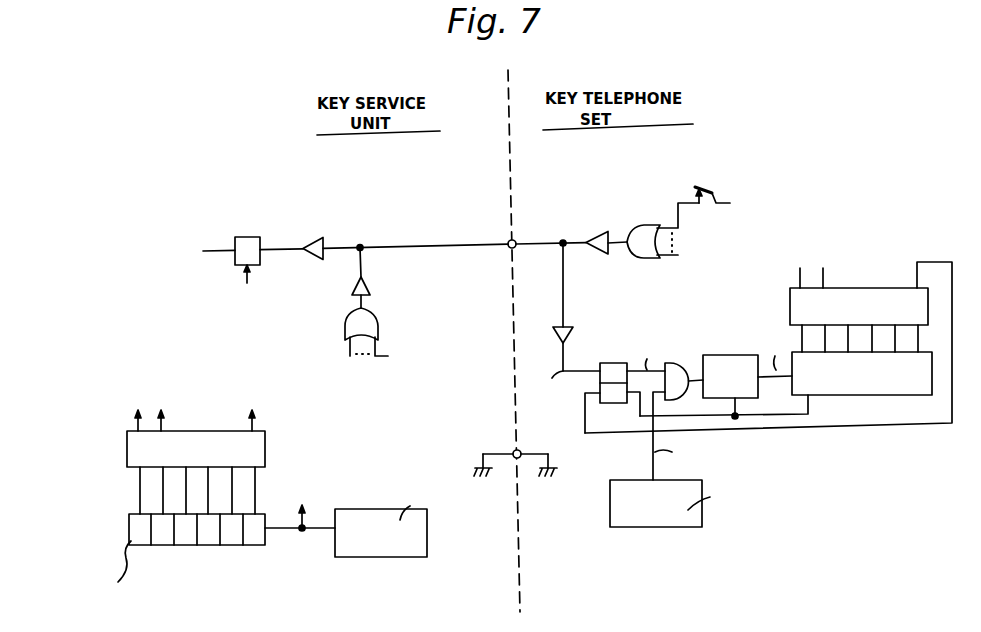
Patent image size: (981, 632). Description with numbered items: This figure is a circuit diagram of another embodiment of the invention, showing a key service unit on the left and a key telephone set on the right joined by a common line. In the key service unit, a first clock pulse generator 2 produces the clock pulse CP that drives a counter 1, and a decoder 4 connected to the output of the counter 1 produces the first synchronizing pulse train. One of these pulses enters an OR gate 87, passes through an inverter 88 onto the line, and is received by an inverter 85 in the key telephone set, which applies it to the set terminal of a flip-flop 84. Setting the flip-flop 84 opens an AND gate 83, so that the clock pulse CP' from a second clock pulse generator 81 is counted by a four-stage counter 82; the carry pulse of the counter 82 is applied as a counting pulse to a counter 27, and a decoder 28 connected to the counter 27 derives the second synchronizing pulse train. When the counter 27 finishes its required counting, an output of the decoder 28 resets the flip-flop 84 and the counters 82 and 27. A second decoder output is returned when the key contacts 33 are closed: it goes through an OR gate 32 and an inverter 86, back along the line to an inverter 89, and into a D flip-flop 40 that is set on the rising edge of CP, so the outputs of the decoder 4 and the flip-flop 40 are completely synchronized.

The counter 1 is at (190, 548).
The clock pulse generator 2 is at (375, 557).
The decoder 4 is at (203, 431).
The counter 27 is at (892, 396).
The decoder 28 is at (874, 287).
The OR gate 32 is at (655, 260).
The key contacts 33 is at (705, 186).
The flip-flop 40 is at (246, 236).
The clock pulse generator 81 is at (658, 528).
The counter 82 is at (730, 354).
The AND gate 83 is at (670, 361).
The flip-flop 84 is at (614, 361).
The inverter 85 is at (574, 335).
The inverter 86 is at (598, 230).
The OR gate 87 is at (380, 330).
The inverter 88 is at (372, 284).
The inverter 89 is at (314, 237).